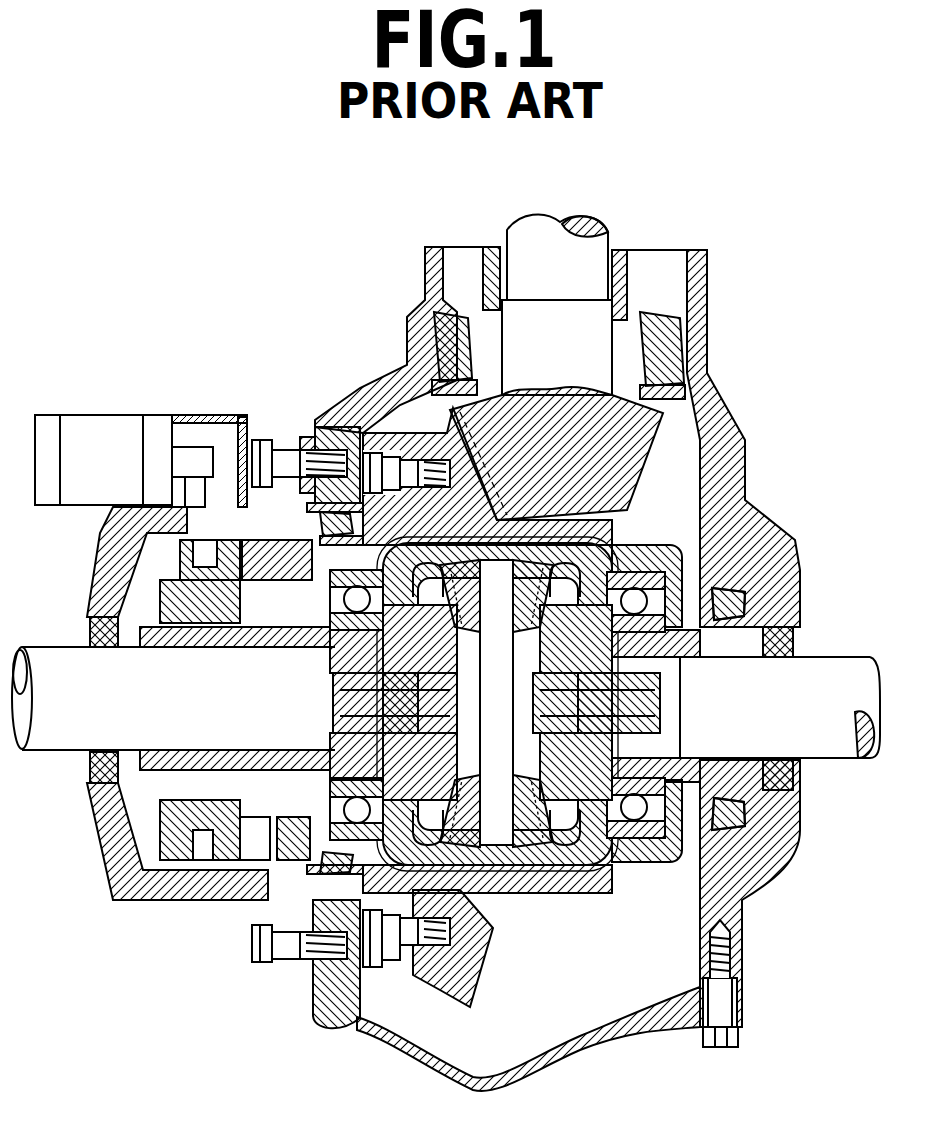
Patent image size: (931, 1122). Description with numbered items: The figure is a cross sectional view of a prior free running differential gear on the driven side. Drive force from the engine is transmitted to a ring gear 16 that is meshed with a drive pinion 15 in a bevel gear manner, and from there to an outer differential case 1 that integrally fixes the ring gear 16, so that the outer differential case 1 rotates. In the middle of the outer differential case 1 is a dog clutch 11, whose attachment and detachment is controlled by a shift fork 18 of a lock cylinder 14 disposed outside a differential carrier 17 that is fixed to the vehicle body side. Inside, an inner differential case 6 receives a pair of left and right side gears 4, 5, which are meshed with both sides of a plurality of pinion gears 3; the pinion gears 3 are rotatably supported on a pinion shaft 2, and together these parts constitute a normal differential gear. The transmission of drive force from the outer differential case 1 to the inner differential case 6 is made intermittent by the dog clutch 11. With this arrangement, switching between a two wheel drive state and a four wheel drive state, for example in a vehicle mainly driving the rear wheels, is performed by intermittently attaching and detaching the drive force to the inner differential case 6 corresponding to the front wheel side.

The outer differential case 1 is at (680, 545).
The pinion shaft 2 is at (497, 858).
The pinion gears 3 is at (600, 676).
The left side gear 4 is at (340, 650).
The right side gear 5 is at (650, 672).
The inner differential case 6 is at (310, 663).
The dog clutch 11 is at (273, 590).
The lock cylinder 14 is at (100, 440).
The drive pinion 15 is at (568, 410).
The ring gear 16 is at (437, 430).
The differential carrier 17 is at (312, 425).
The shift fork 18 is at (172, 563).